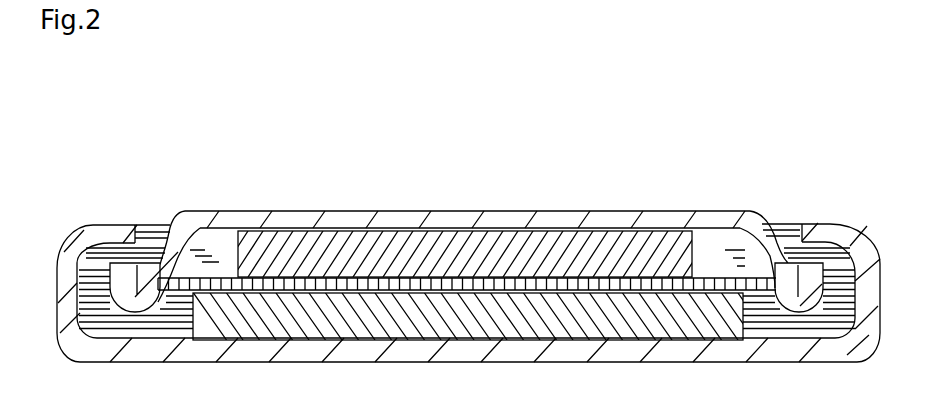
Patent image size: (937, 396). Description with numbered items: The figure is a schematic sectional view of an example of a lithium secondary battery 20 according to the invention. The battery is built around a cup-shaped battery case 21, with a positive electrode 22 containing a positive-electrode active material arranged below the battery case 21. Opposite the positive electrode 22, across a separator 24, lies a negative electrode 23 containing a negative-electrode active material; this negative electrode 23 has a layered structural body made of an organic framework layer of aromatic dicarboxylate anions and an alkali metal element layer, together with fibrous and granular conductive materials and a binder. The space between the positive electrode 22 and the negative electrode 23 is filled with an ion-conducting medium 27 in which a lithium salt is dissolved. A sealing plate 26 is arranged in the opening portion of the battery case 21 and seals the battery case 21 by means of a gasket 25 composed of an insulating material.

The lithium secondary battery 20 is at (715, 138).
The battery case 21 is at (77, 222).
The positive electrode 22 is at (453, 318).
The negative electrode 23 is at (297, 257).
The separator 24 is at (367, 285).
The gasket 25 is at (172, 225).
The sealing plate 26 is at (662, 228).
The ion-conducting medium 27 is at (220, 257).